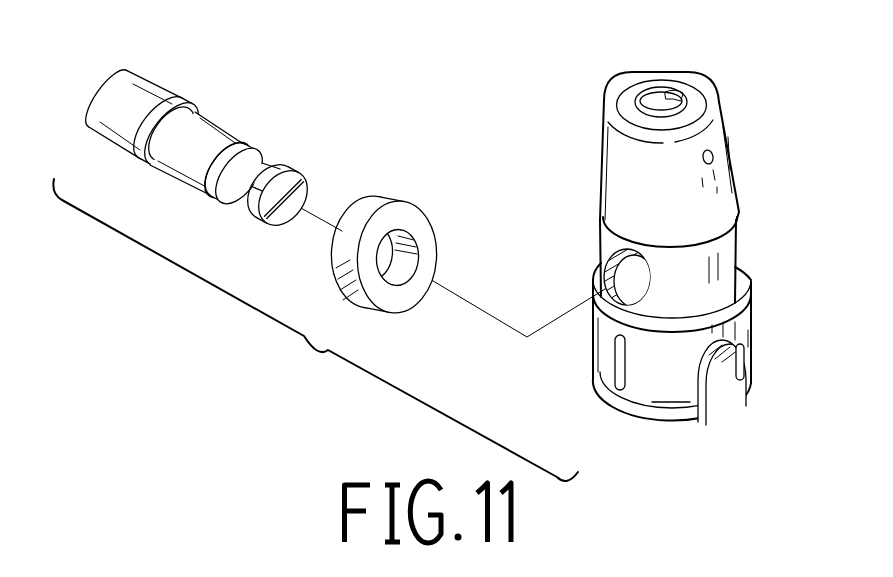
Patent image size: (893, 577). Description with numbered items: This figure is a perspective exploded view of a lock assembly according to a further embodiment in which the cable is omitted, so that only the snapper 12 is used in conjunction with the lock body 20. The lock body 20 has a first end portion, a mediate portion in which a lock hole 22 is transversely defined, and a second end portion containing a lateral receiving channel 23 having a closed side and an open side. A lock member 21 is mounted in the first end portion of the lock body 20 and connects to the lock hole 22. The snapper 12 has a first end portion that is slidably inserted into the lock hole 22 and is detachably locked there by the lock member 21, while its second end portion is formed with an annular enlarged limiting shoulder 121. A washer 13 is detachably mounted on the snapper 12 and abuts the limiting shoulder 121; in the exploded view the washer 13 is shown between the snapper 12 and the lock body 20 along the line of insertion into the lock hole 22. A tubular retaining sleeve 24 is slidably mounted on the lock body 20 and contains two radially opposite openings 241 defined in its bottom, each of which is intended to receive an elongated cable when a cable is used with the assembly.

The snapper 12 is at (197, 124).
The annular enlarged limiting shoulder 121 is at (130, 111).
The washer 13 is at (380, 206).
The lock body 20 is at (655, 245).
The lock member 21 is at (632, 95).
The lock hole 22 is at (604, 268).
The lateral receiving channel 23 is at (762, 401).
The tubular retaining sleeve 24 is at (690, 370).
The radially opposite openings 241 is at (738, 366).